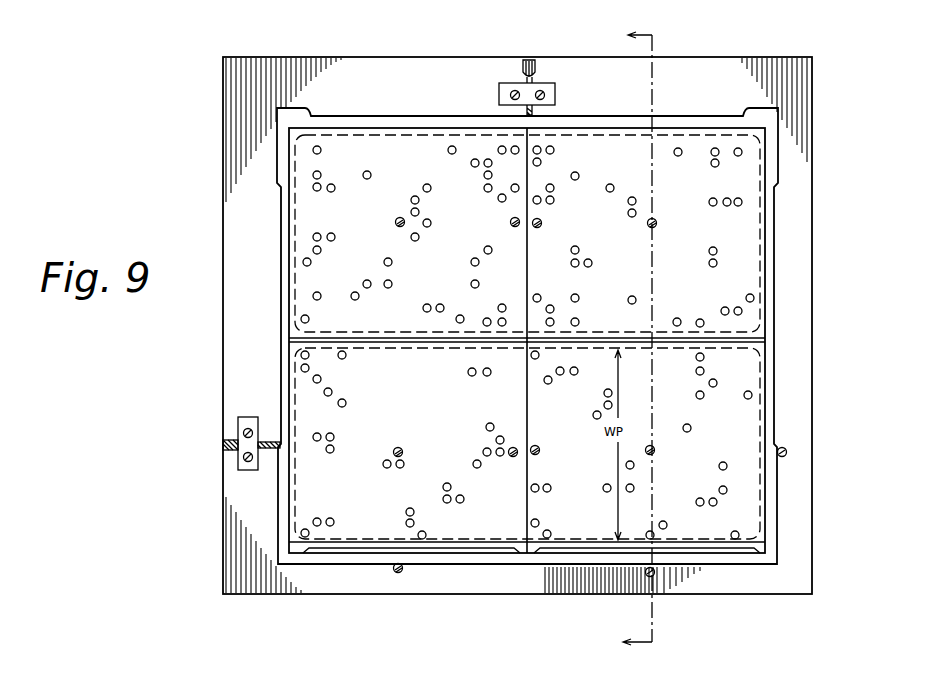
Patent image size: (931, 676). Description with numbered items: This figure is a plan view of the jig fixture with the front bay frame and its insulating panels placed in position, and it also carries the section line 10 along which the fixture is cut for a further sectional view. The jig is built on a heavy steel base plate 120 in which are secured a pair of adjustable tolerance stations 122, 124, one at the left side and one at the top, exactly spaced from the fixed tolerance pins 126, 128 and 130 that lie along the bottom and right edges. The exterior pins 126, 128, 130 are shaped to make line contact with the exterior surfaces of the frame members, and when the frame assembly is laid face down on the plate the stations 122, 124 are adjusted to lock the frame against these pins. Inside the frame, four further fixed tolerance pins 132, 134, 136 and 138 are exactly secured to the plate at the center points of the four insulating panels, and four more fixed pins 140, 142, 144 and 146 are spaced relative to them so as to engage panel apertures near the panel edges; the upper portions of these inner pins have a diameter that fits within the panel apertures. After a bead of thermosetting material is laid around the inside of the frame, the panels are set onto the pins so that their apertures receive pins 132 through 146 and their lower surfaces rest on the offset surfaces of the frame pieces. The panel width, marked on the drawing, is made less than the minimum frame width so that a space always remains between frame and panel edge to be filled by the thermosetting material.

The section line 10- 10 is at (621, 341).
The base plate 120 is at (228, 566).
The adjustable tolerance station 122 is at (247, 417).
The adjustable tolerance station 124 is at (499, 92).
The fixed tolerance pin 126 is at (402, 571).
The fixed tolerance pin 128 is at (655, 574).
The fixed tolerance pin 130 is at (786, 455).
The fixed tolerance pin 132 is at (398, 447).
The fixed tolerance pin 134 is at (655, 450).
The fixed tolerance pin 136 is at (647, 225).
The fixed tolerance pin 138 is at (396, 220).
The fixed pin 140 is at (511, 222).
The fixed pin 142 is at (541, 220).
The fixed pin 144 is at (512, 457).
The fixed pin 146 is at (538, 455).